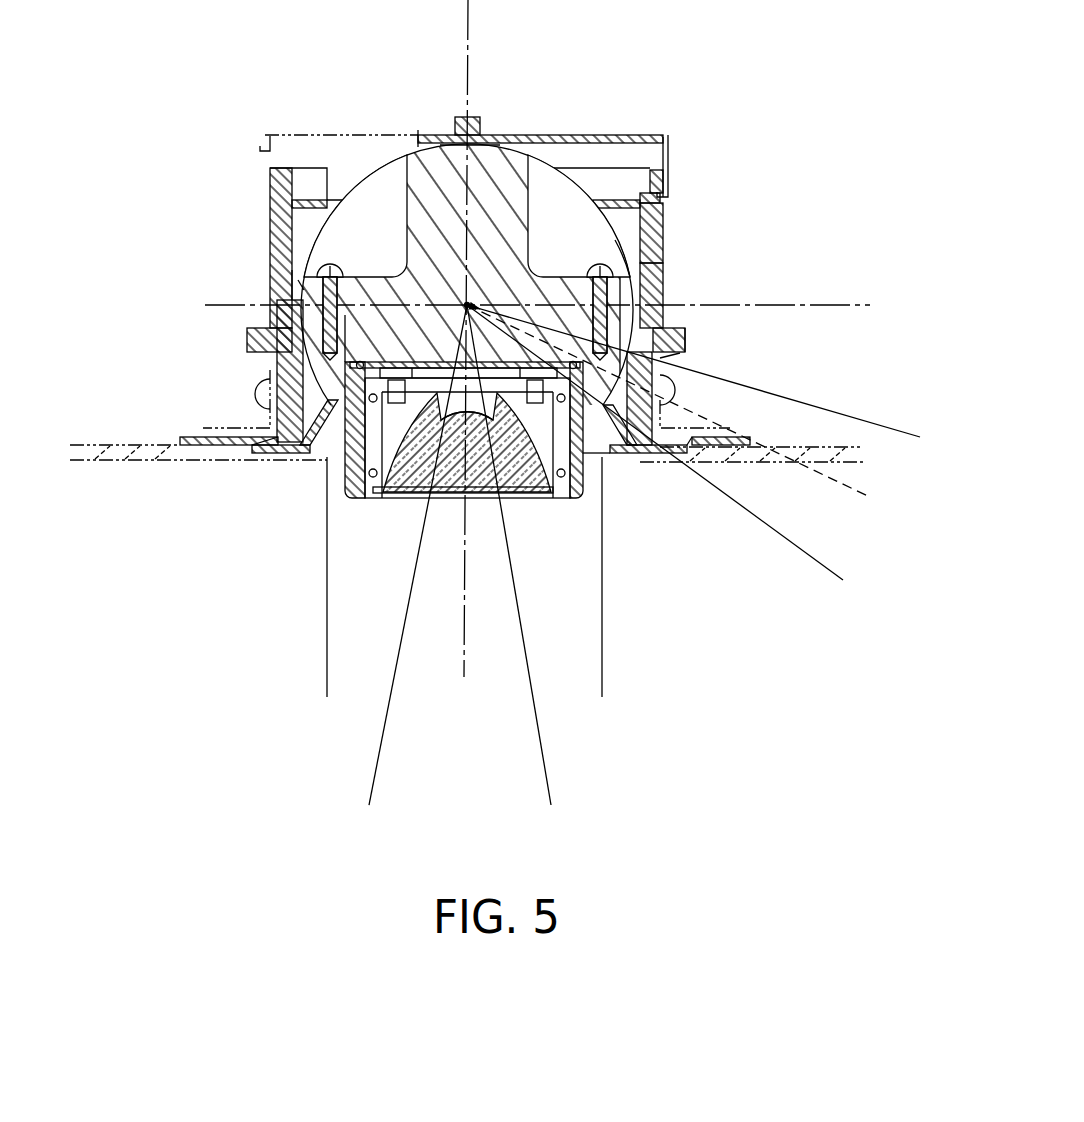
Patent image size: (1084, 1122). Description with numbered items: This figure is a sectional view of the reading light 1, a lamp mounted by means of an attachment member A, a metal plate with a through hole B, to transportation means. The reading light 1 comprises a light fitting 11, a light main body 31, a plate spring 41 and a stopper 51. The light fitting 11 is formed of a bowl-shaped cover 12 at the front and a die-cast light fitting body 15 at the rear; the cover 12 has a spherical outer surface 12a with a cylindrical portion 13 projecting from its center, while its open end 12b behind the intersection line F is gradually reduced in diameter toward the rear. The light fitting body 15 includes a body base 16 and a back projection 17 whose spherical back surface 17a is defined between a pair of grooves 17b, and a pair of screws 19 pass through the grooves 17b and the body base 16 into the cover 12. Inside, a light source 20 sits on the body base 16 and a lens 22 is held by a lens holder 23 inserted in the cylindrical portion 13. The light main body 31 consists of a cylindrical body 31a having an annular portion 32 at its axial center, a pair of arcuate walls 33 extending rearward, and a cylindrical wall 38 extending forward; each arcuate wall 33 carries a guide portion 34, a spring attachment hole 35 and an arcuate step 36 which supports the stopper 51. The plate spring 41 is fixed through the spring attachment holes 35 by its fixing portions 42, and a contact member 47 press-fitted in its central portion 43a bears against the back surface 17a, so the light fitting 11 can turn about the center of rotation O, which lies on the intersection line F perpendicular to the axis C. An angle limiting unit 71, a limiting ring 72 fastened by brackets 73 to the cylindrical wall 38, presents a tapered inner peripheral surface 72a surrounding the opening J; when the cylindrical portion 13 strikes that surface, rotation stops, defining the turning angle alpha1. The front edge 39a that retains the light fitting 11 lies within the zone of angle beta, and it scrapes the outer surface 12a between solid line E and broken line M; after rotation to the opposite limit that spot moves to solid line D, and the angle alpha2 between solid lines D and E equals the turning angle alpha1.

The reading light 1 is at (268, 232).
The light fitting 11 is at (296, 276).
The cover 12 is at (286, 356).
The outer surface 12a is at (268, 394).
The open end 12b is at (300, 287).
The cylindrical portion 13 is at (577, 499).
The light fitting body 15 is at (342, 200).
The body base 16 is at (373, 292).
The back projection 17 is at (510, 195).
The back surface 17a is at (523, 148).
The grooves 17b is at (382, 190).
The screws 19 is at (330, 265).
The light source 20 is at (456, 494).
The lens 22 is at (520, 492).
The lens holder 23 is at (378, 498).
The light main body 31 is at (668, 330).
The cylindrical body 31a is at (690, 346).
The annular portion 32 is at (250, 336).
The arcuate walls 33 is at (272, 196).
The guide portion 34 is at (660, 185).
The spring attachment hole 35 is at (658, 232).
The arcuate steps 36 is at (616, 244).
The cylindrical wall 38 is at (665, 426).
The front edge 39a is at (660, 360).
The plate spring 41 is at (672, 136).
The fixing portions 42 is at (657, 200).
The central portion 43a is at (497, 135).
The contact member 47 is at (460, 117).
The stopper 51 is at (618, 200).
The angle limiting unit 71 is at (305, 512).
The limiting ring 72 is at (289, 460).
The inner peripheral surface 72a is at (610, 454).
The brackets 73 is at (250, 463).
The attachment member A is at (95, 462).
The through hole B is at (224, 463).
The axis C is at (466, 23).
The solid line D is at (778, 534).
The solid line E is at (773, 394).
The intersection line F is at (812, 300).
The opening J is at (600, 682).
The broken line M is at (833, 480).
The center of rotation O is at (465, 302).
The turning angle alpha1 is at (539, 744).
The angle α2 alpha2 is at (899, 434).
The angle β beta is at (852, 307).